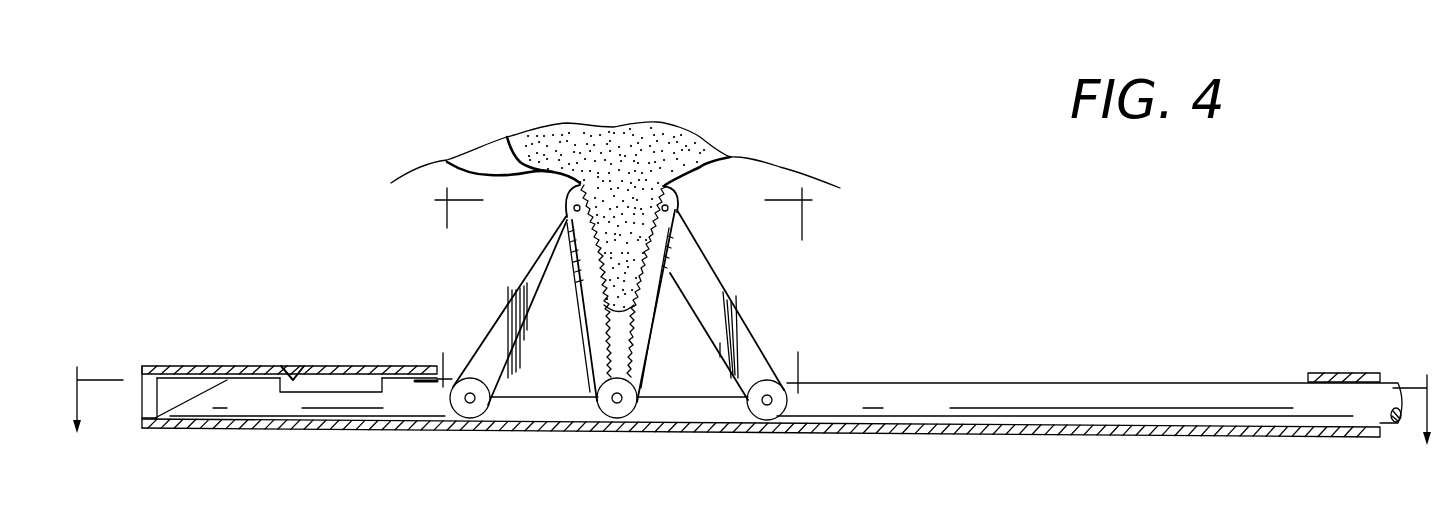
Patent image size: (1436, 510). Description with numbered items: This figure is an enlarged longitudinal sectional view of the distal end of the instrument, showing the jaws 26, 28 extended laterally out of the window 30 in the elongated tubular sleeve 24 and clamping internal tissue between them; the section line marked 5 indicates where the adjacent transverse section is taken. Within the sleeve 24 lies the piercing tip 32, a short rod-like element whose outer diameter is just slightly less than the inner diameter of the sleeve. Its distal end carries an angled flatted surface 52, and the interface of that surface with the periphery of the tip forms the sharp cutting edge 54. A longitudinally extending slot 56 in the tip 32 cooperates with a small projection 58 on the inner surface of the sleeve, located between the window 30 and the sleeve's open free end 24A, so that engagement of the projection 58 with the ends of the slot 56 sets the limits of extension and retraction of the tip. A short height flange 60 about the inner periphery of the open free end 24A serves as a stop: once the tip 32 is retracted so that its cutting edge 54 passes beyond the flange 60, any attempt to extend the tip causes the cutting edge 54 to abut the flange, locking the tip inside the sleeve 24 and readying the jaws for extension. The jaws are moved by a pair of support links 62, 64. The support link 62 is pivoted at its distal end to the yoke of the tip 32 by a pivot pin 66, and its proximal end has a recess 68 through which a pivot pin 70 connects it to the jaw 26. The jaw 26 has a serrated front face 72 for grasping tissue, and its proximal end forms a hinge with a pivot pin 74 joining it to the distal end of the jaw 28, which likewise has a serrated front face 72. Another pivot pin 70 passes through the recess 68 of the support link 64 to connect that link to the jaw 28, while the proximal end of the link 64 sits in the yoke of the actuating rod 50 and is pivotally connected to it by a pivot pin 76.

The section line 5- 5 is at (750, 423).
The tubular sleeve 24 is at (350, 430).
The open free end 24A is at (142, 388).
The jaw 26 is at (538, 291).
The jaw 28 is at (710, 297).
The window 30 is at (1307, 377).
The piercing tip 32 is at (262, 403).
The actuating rod 50 is at (980, 390).
The angled flatted surface 52 is at (187, 397).
The cutting edge 54 is at (167, 417).
The slot 56 is at (327, 392).
The projection 58 is at (293, 367).
The flange 60 is at (142, 408).
The support link 62 is at (493, 343).
The support link 64 is at (748, 350).
The pivot pin 66 is at (470, 403).
The recess 68 is at (672, 262).
The pivot pin 70 is at (570, 210).
The serrated front face 72 is at (603, 357).
The pivot pin 74 is at (617, 403).
The pivot pin 76 is at (767, 405).